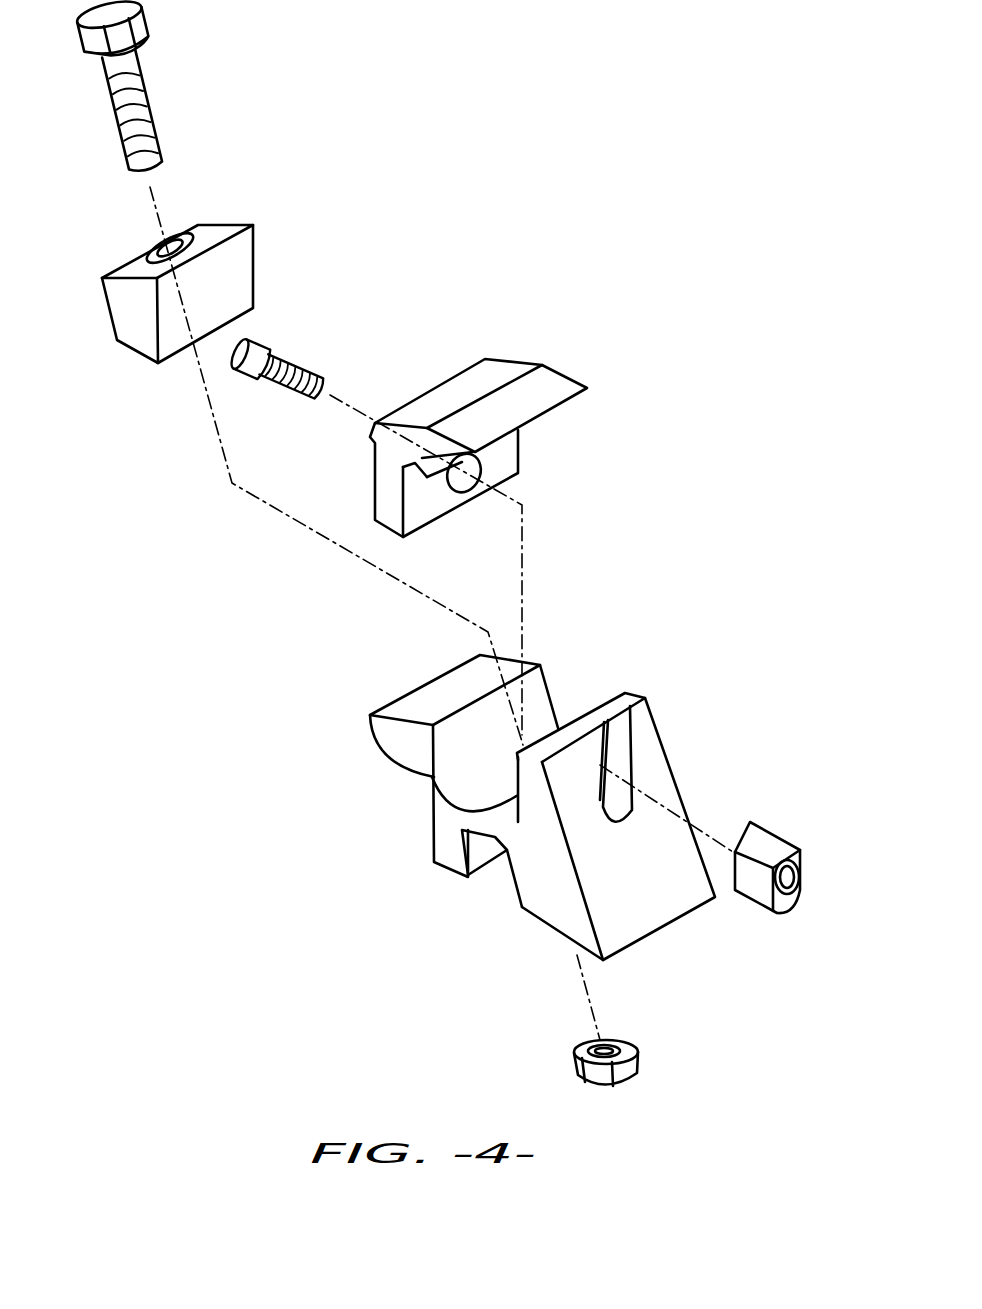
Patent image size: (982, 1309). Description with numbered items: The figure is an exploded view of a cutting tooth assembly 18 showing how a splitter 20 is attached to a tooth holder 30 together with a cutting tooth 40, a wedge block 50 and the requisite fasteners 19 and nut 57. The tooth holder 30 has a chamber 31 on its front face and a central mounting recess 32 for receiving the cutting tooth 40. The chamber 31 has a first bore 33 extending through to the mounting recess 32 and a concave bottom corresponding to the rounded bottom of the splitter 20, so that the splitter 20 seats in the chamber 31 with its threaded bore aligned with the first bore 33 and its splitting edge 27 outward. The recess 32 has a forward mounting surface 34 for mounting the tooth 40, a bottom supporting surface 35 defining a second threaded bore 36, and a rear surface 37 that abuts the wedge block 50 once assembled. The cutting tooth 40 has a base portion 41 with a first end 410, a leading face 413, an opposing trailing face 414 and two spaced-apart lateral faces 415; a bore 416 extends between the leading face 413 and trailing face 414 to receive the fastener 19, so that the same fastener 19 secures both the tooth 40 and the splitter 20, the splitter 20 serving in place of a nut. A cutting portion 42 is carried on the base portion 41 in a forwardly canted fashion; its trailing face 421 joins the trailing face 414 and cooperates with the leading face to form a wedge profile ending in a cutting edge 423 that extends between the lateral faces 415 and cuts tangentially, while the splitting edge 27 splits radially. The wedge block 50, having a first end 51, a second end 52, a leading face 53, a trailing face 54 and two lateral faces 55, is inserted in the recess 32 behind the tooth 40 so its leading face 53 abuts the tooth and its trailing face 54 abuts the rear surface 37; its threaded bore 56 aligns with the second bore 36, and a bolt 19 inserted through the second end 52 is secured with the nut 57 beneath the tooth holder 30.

The cutting tooth assembly 18 is at (567, 140).
The fastener 19 is at (150, 102).
The splitter 20 is at (785, 896).
The splitting edge 27 is at (767, 827).
The tooth holder 30 is at (542, 788).
The chamber 31 is at (600, 760).
The mounting recess 32 is at (567, 708).
The first bore 33 is at (612, 745).
The forward mounting surface 34 is at (434, 862).
The bottom supporting surface 35 is at (485, 787).
The second threaded bore 36 is at (510, 755).
The rear surface 37 is at (437, 775).
The cutting tooth 40 is at (467, 451).
The base portion 41 is at (446, 525).
The cutting portion 42 is at (508, 379).
The first end 410 is at (390, 530).
The leading face 413 is at (433, 503).
The trailing face 414 is at (373, 460).
The lateral faces 415 is at (388, 500).
The bore 416 is at (497, 467).
The trailing face 421 is at (553, 383).
The cutting edge 423 is at (553, 412).
The wedge block 50 is at (187, 275).
The first end 51 is at (132, 350).
The second end 52 is at (212, 233).
The leading face 53 is at (218, 306).
The trailing face 54 is at (108, 300).
The lateral faces 55 is at (130, 307).
The threaded bore 56 is at (165, 248).
The nut 57 is at (638, 1055).